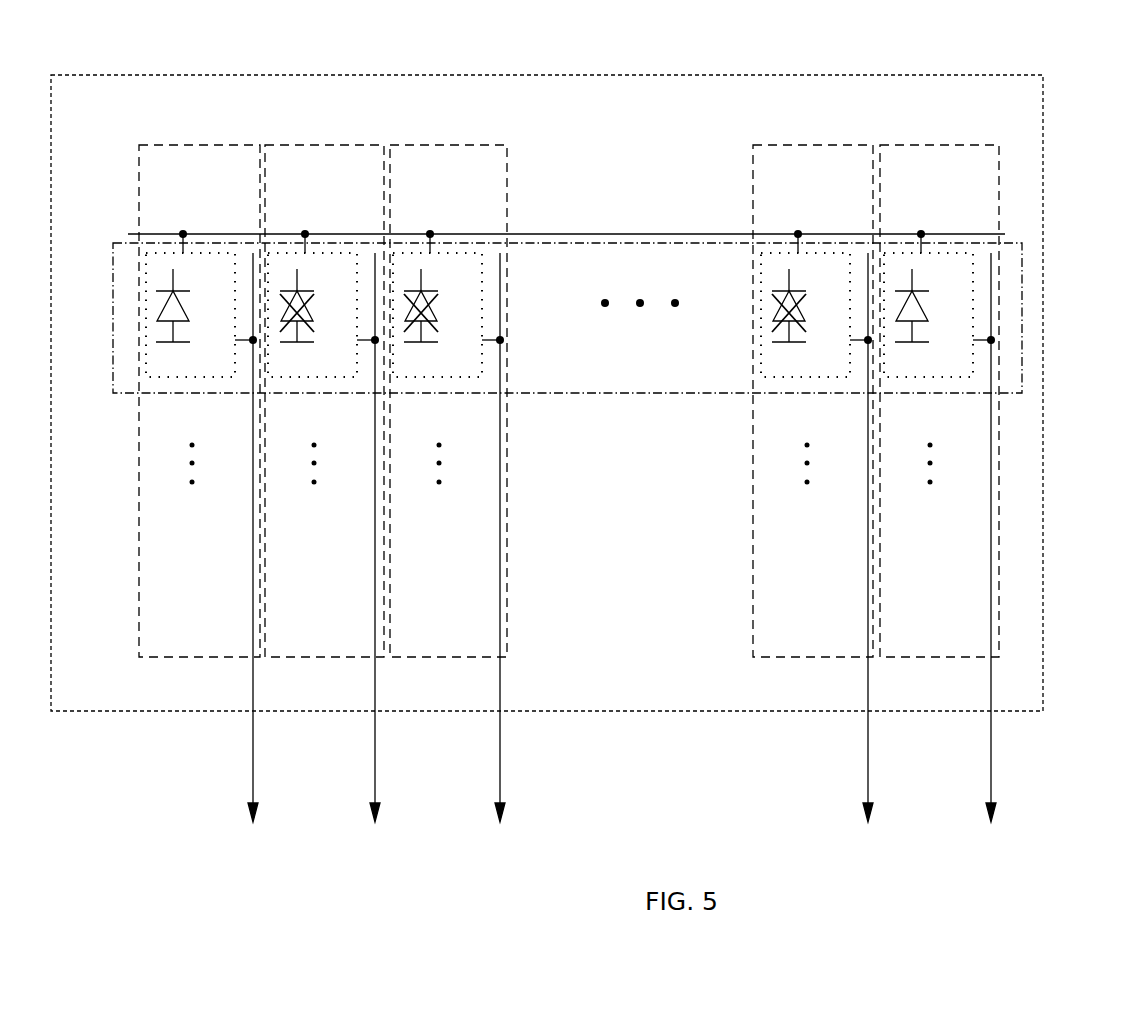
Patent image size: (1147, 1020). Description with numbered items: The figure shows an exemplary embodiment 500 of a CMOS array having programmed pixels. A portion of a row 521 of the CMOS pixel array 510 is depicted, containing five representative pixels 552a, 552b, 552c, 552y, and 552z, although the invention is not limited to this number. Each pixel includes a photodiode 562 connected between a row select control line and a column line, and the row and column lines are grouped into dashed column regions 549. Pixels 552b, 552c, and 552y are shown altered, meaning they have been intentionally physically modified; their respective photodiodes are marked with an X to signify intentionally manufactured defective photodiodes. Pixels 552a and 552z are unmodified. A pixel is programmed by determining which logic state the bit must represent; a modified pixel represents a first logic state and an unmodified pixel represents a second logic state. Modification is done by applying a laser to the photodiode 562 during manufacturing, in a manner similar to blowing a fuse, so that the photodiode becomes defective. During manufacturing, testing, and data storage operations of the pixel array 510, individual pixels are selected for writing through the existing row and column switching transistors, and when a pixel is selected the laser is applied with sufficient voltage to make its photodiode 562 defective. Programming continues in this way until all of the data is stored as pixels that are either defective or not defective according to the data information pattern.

The detector array system 500 is at (1085, 30).
The CMOS pixel array 510 is at (113, 698).
The row 521 is at (1022, 263).
The column 549 is at (139, 145).
The pixel 552a is at (228, 365).
The pixel 552b is at (350, 365).
The pixel 552c is at (475, 365).
The pixel 552y is at (843, 365).
The pixel 552z is at (966, 365).
The photodiode 562 is at (220, 287).